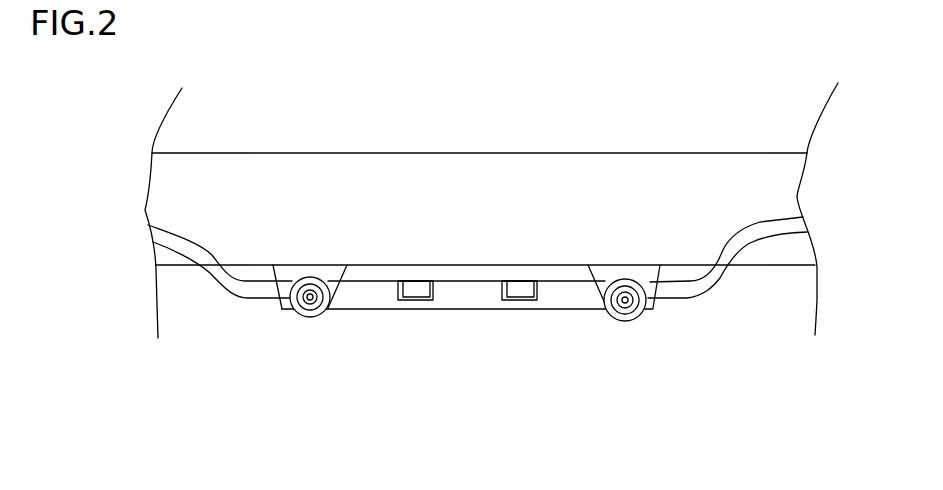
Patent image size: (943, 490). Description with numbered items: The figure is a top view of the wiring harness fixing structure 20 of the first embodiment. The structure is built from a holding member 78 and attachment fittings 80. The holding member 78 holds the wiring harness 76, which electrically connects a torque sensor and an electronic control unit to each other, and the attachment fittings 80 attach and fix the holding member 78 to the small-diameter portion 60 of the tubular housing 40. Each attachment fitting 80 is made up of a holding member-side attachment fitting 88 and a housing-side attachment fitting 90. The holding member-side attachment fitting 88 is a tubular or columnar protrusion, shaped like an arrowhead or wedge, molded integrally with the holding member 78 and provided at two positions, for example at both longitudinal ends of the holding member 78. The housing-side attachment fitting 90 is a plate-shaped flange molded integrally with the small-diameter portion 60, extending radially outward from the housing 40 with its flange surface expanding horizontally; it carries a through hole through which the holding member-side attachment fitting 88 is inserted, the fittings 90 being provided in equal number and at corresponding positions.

The wiring harness fixing structure 20 is at (460, 341).
The housing 40 is at (491, 195).
The small-diameter portion 60 is at (475, 167).
The wiring harness 76 is at (713, 285).
The holding member 78 is at (467, 300).
The attachment fitting 80 is at (474, 365).
The holding member-side attachment fitting 88 is at (387, 395).
The housing-side attachment fitting 90 is at (328, 273).